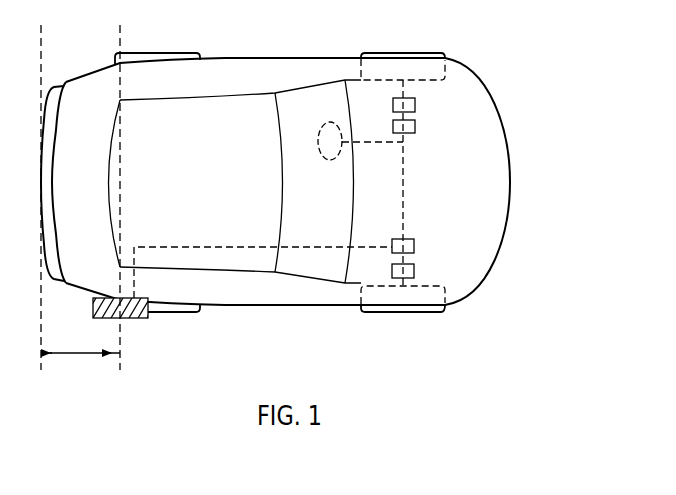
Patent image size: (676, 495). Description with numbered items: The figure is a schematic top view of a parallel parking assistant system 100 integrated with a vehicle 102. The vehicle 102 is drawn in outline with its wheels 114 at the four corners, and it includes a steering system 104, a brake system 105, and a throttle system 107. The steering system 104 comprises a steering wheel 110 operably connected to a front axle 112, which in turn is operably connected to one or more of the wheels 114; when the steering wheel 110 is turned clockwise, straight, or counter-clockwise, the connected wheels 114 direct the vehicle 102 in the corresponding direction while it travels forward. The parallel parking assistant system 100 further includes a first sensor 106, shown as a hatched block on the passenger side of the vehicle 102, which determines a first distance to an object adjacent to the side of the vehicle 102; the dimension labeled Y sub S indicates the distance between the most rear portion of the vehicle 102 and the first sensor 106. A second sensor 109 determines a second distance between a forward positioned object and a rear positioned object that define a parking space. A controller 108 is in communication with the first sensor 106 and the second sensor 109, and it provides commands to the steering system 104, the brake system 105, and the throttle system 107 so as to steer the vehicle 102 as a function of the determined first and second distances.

The parallel parking assistant system 100 is at (506, 42).
The vehicle 102 is at (258, 55).
The steering system 104 is at (406, 194).
The brake system 105 is at (417, 125).
The first sensor 106 is at (132, 320).
The throttle system 107 is at (417, 102).
The controller 108 is at (410, 236).
The second sensor 109 is at (410, 266).
The steering wheel 110 is at (331, 162).
The front axle 112 is at (401, 163).
The wheels 114 is at (163, 53).